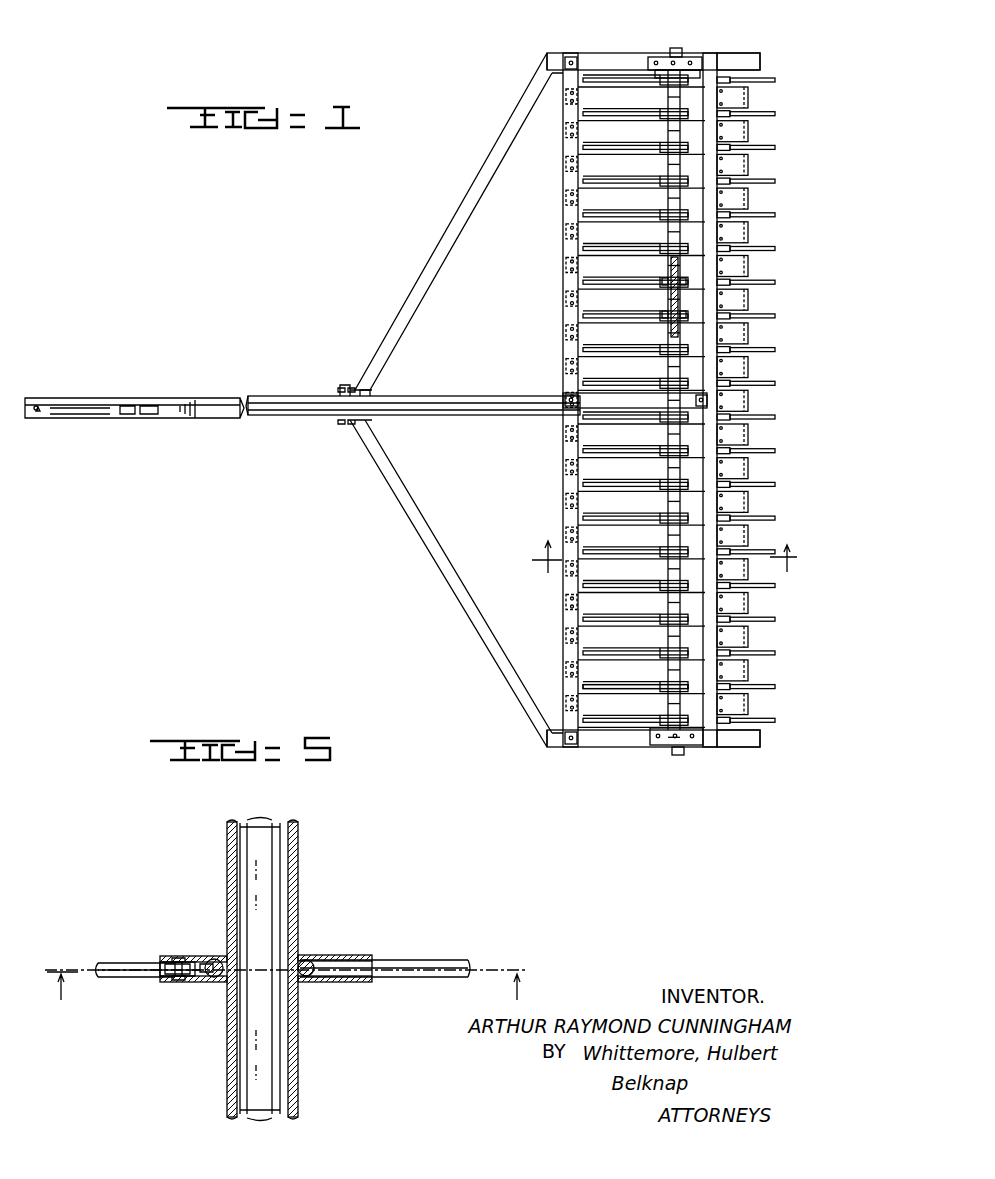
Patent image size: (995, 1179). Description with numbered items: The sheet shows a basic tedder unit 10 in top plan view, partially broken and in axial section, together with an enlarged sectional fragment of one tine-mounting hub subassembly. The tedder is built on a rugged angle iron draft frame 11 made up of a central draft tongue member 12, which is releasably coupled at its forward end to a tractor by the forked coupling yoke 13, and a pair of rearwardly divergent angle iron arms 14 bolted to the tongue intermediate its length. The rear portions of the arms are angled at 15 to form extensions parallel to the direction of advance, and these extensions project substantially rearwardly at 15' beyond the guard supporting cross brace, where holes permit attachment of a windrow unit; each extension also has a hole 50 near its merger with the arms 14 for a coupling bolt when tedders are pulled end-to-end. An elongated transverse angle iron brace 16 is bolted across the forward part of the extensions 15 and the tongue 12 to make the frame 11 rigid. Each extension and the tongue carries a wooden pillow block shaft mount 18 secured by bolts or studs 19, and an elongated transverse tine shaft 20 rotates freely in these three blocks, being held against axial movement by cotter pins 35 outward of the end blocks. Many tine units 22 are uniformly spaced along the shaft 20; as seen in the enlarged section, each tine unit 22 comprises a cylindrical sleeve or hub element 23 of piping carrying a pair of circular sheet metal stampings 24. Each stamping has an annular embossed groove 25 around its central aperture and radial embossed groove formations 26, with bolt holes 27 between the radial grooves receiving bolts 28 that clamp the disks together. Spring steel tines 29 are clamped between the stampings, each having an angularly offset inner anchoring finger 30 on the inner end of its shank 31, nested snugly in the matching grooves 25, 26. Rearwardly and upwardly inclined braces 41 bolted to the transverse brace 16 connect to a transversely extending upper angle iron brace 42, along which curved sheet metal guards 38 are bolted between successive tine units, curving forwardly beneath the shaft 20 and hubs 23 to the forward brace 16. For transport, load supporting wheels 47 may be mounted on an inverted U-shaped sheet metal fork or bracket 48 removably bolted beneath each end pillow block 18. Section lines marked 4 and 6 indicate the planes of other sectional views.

In FIG. 1, the section line 4- 4 is at (664, 564).
In FIG. 5, the section line 6- 6 is at (283, 996).
In FIG. 1, the tedder unit 10 is at (390, 507).
In FIG. 1, the draft frame 11 is at (404, 294).
In FIG. 1, the central draft tongue member 12 is at (262, 420).
In FIG. 1, the forked coupling yoke 13 is at (78, 420).
In FIG. 1, the rearwardly divergent angle iron arms 14 is at (480, 193).
In FIG. 1, the extensions 15 is at (653, 404).
In FIG. 1, the rearward projection of extensions 15' is at (752, 403).
In FIG. 1, the transverse angle iron brace 16 is at (565, 320).
In FIG. 1, the pillow block shaft mount 18 is at (676, 758).
In FIG. 1, the bolts or studs 19 is at (702, 745).
In FIG. 1, the transverse tine shaft 20 is at (682, 272).
In FIG. 5, the transverse tine shaft 20 is at (268, 887).
In FIG. 1, the tine unit 22 is at (578, 152).
In FIG. 5, the tine unit 22 is at (307, 930).
In FIG. 1, the cylindrical sleeve or hub element 23 is at (671, 265).
In FIG. 5, the cylindrical sleeve or hub element 23 is at (298, 836).
In FIG. 1, the tine mounting stampings 24 is at (668, 288).
In FIG. 5, the tine mounting stampings 24 is at (215, 985).
In FIG. 5, the annular embossed groove 25 is at (225, 958).
In FIG. 5, the radial embossed groove formations 26 is at (205, 958).
In FIG. 5, the bolt holes 27 is at (180, 978).
In FIG. 5, the bolts 28 is at (180, 963).
In FIG. 1, the tines 29 is at (735, 284).
In FIG. 5, the inner anchoring finger 30 is at (305, 982).
In FIG. 1, the shank 31 is at (600, 690).
In FIG. 5, the shank 31 is at (138, 972).
In FIG. 1, the cotter pins 35 is at (683, 52).
In FIG. 1, the guards 38 is at (578, 320).
In FIG. 1, the rearwardly and upwardly inclined braces 41 is at (615, 62).
In FIG. 1, the upper angle iron brace 42 is at (730, 207).
In FIG. 1, the load supporting wheels 47 is at (650, 62).
In FIG. 1, the sheet metal fork or bracket 48 is at (700, 76).
In FIG. 1, the hole 50 is at (568, 60).